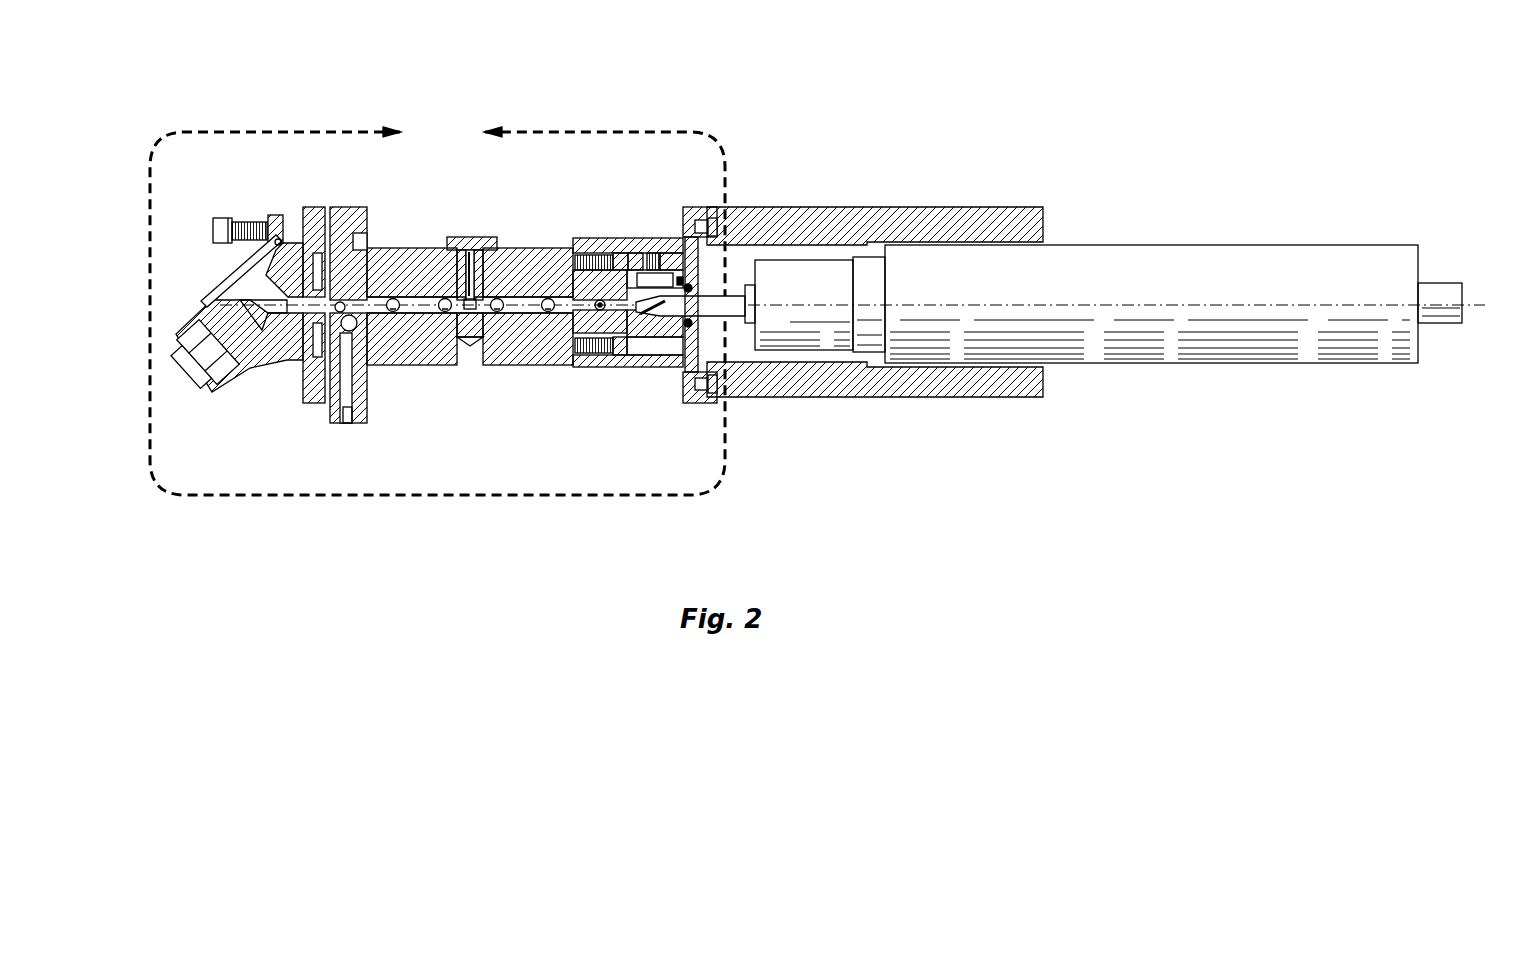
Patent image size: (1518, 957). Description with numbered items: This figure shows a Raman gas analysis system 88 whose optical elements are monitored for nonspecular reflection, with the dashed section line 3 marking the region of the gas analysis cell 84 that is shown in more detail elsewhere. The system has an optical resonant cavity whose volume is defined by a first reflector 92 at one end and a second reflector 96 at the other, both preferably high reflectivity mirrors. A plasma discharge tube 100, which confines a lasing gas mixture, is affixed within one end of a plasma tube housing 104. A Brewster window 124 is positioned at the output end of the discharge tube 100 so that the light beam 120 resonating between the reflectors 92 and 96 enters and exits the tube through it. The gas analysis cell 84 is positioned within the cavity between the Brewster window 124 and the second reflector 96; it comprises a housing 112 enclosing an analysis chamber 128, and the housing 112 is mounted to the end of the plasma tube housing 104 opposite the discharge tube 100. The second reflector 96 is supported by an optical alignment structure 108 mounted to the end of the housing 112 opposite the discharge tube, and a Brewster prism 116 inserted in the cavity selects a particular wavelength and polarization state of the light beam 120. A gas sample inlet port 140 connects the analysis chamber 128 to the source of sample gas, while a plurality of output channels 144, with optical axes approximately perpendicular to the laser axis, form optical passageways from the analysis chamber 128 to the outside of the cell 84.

The section line 3- 3 is at (437, 292).
The gas analysis cell 84 is at (561, 388).
The Raman gas analysis system 88 is at (1062, 90).
The first reflector 92 is at (1462, 290).
The second reflector 96 is at (238, 325).
The plasma discharge tube 100 is at (1203, 258).
The plasma tube housing 104 is at (875, 207).
The optical alignment structure 108 is at (332, 420).
The housing 112 is at (395, 247).
The Brewster prism 116 is at (258, 330).
The light beam 120 is at (563, 285).
The Brewster window 124 is at (628, 330).
The analysis chamber 128 is at (525, 298).
The gas sample inlet port 140 is at (467, 237).
The output channels 144 is at (548, 313).